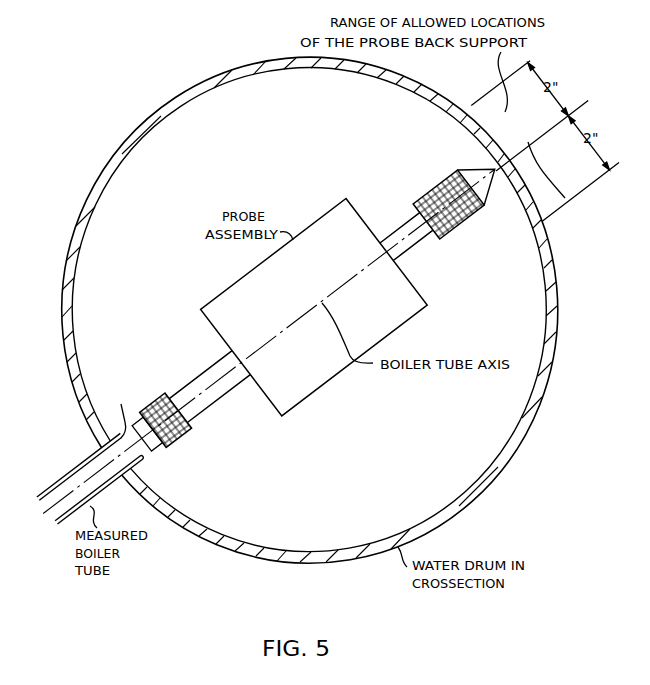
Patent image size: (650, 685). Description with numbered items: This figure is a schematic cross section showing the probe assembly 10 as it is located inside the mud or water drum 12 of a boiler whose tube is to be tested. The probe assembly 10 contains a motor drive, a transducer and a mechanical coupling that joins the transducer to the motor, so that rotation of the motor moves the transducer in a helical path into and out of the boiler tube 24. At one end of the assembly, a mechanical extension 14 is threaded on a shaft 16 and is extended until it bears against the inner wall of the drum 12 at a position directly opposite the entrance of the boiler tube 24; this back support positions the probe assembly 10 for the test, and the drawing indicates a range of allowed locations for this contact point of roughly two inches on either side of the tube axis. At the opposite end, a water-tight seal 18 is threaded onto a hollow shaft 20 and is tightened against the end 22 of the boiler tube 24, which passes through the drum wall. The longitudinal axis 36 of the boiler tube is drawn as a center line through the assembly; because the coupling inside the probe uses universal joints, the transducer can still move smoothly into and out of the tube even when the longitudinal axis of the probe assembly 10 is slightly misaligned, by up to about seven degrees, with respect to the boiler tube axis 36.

The probe assembly 10 is at (301, 288).
The mud or water drum 12 is at (302, 508).
The mechanical extension 14 is at (437, 184).
The shaft 16 is at (385, 239).
The water-tight seal 18 is at (141, 416).
The hollow shaft 20 is at (186, 386).
The end of the boiler tube 22 is at (119, 429).
The boiler tube 24 is at (80, 466).
The longitudinal axis of the boiler tube 36 is at (256, 353).